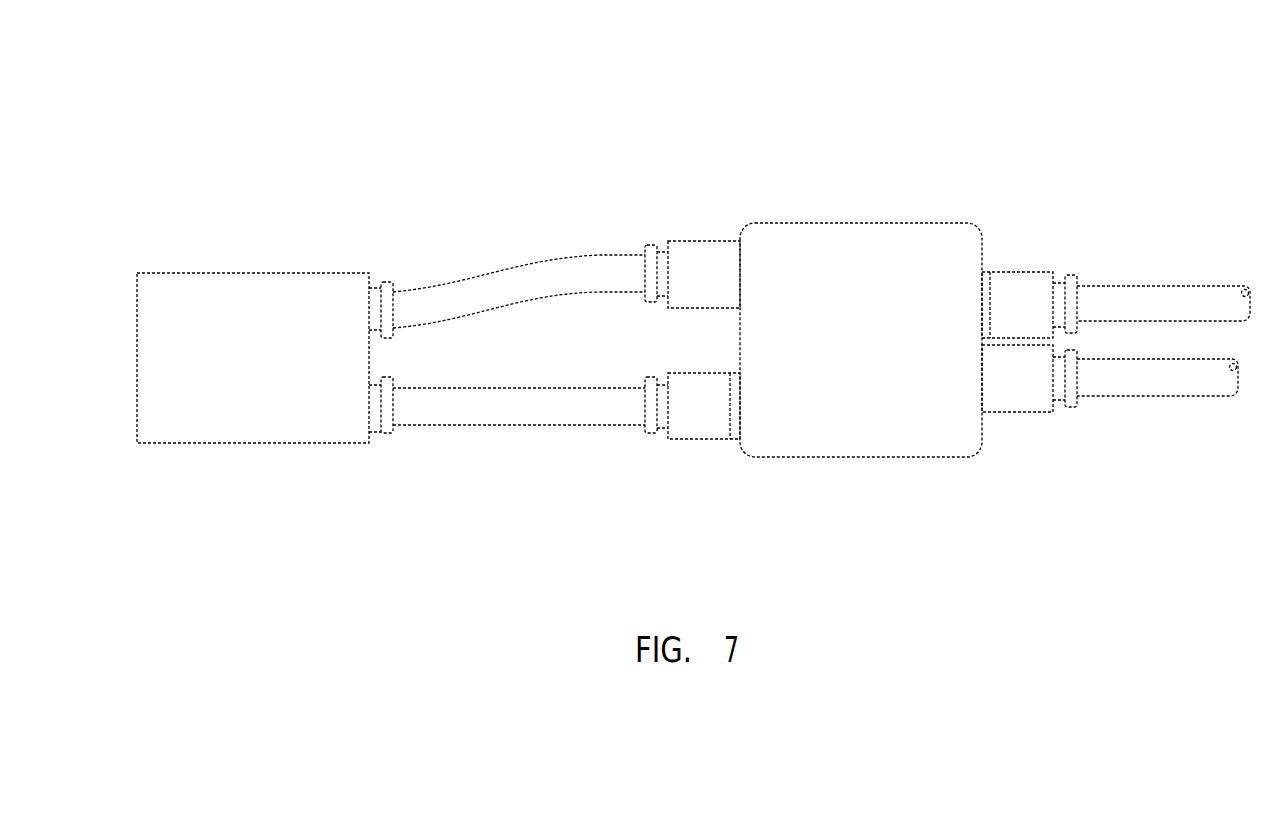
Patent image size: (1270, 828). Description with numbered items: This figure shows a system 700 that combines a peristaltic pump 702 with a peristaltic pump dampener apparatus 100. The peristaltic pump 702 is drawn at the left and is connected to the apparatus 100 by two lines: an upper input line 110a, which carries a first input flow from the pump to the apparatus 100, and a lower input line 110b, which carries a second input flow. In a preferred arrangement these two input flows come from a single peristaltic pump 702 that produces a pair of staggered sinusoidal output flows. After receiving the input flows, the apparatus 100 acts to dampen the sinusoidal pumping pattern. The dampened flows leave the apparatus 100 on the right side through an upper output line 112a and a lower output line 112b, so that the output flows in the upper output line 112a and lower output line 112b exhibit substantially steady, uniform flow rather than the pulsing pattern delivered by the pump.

The system 700 is at (222, 182).
The peristaltic pump 702 is at (258, 369).
The upper input line 110a is at (513, 275).
The lower input line 110b is at (470, 425).
The peristaltic pump dampener apparatus 100 is at (878, 361).
The lower output line 112b is at (1145, 285).
The upper output line 112a is at (1155, 395).